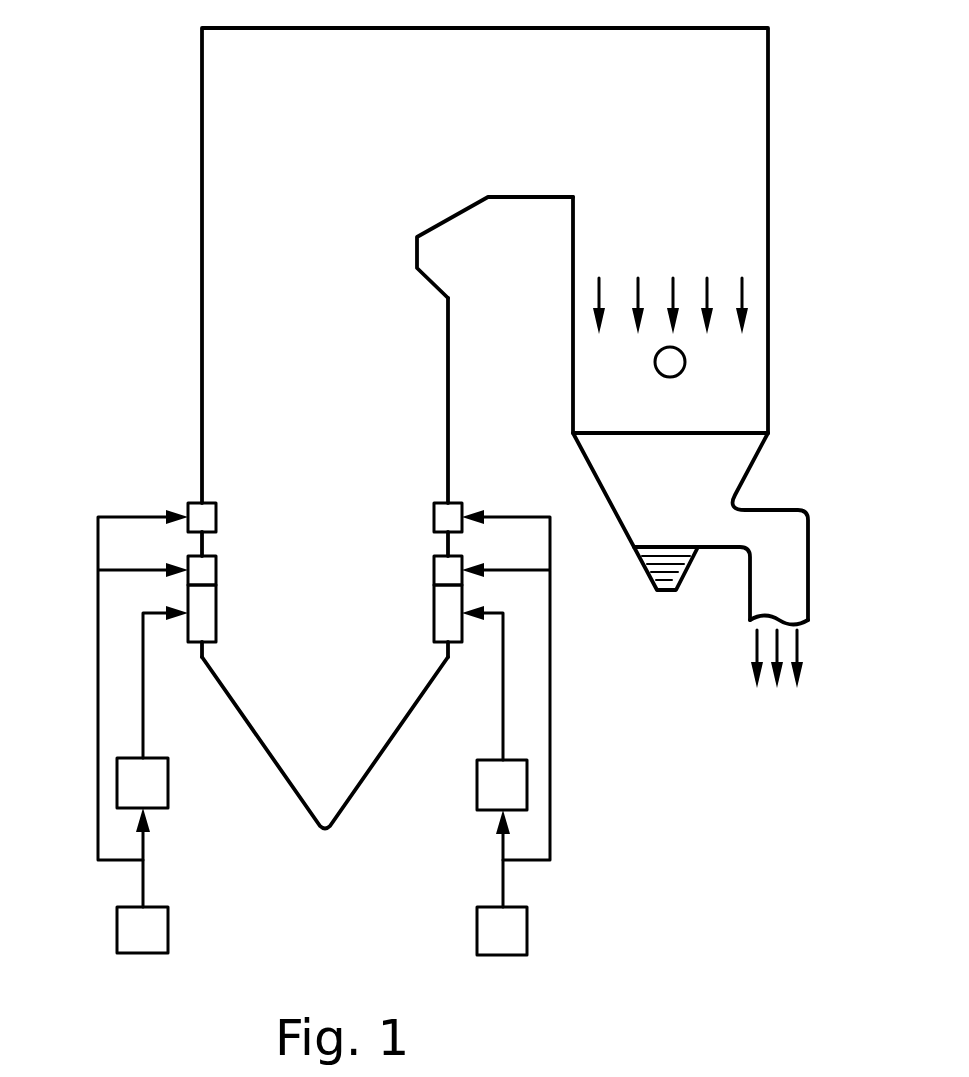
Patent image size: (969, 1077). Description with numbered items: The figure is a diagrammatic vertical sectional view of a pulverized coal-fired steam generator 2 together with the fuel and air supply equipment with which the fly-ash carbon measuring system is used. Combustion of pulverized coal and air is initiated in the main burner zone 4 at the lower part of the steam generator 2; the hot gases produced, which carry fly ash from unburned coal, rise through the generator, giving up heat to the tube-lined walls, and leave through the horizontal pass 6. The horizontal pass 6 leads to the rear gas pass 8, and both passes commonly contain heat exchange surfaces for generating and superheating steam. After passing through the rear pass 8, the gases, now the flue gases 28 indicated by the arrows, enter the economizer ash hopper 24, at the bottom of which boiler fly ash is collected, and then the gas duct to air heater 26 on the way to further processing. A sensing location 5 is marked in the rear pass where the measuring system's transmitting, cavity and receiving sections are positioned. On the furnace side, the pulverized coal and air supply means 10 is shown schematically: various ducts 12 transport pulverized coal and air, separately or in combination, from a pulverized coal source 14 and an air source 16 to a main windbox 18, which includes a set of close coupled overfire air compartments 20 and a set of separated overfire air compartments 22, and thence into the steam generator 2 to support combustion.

The pulverized coal-fired steam generator 2 is at (166, 90).
The main burner zone 4 is at (345, 656).
The sensor / measurement location 5 is at (792, 360).
The horizontal pass 6 is at (480, 140).
The rear gas pass 8 is at (682, 239).
The pulverized coal and air supply means 10 is at (260, 802).
The ducts 12 is at (97, 680).
The pulverized coal source 14 is at (322, 784).
The air source 16 is at (322, 881).
The main windbox 18 is at (216, 616).
The close coupled overfire air (CCOFA) compartments 20 is at (216, 570).
The separated overfire air (SOFA) compartments 22 is at (216, 518).
The economizer ash hopper 24 is at (692, 488).
The gas duct to air heater 26 is at (796, 599).
The flue gases 28 is at (698, 491).